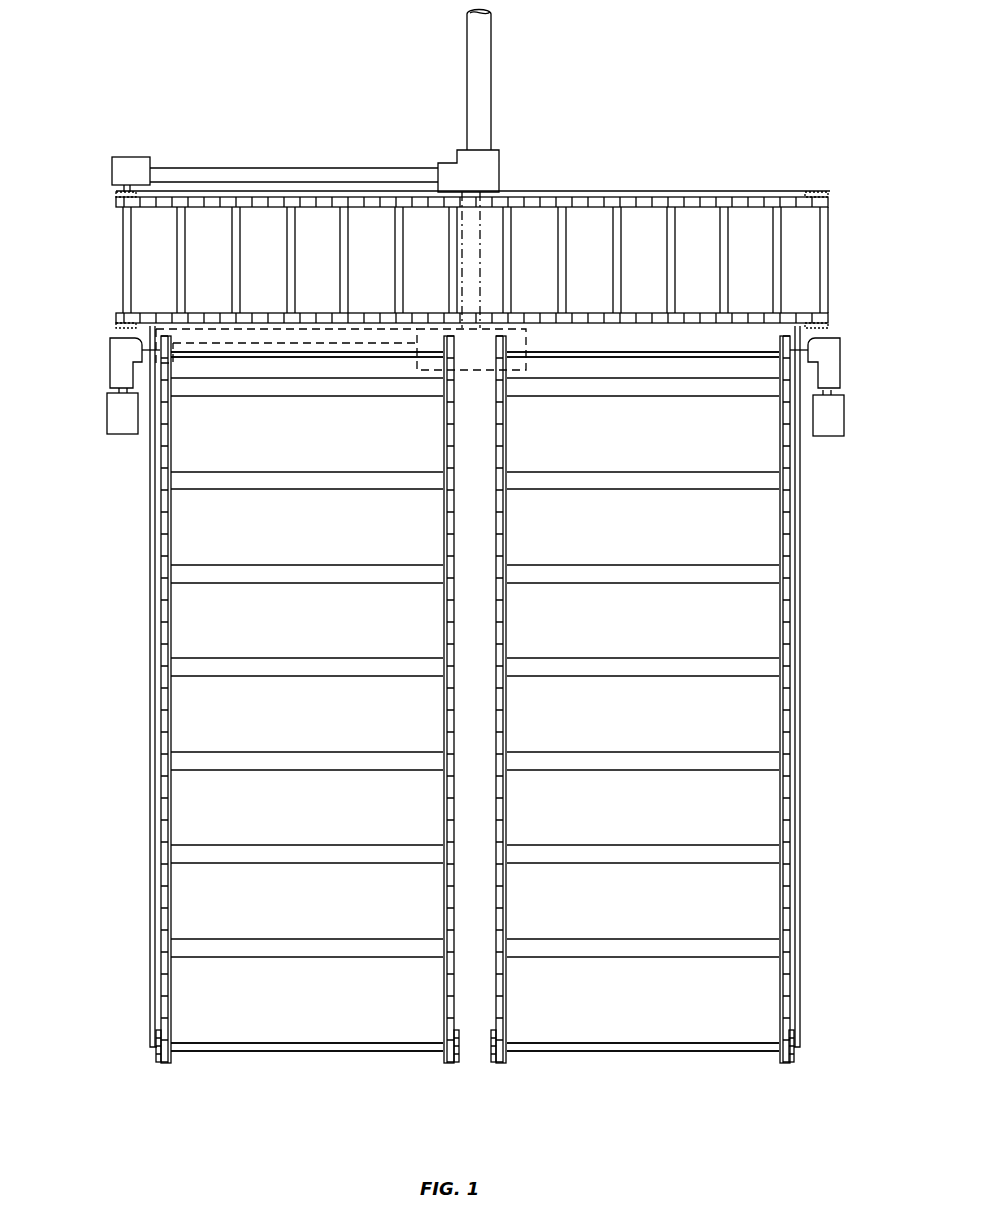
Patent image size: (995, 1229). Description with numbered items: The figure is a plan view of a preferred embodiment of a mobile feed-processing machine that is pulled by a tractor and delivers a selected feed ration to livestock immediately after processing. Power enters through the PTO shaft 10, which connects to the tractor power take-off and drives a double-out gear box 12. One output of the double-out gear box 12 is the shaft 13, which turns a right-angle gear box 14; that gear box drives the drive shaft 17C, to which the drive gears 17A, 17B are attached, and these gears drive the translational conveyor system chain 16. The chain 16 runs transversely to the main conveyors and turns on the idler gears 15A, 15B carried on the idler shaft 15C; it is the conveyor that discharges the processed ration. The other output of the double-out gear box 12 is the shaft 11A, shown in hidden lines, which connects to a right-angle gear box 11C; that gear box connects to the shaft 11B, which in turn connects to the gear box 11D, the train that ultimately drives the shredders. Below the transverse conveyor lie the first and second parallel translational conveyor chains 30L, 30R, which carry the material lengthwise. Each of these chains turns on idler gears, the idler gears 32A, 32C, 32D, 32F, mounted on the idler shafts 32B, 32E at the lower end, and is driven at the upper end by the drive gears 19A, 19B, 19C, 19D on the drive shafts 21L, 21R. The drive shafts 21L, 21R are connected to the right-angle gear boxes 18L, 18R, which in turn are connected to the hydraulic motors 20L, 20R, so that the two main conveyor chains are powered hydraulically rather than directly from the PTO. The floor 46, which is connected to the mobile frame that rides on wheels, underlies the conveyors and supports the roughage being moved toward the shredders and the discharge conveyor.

The PTO shaft 10 is at (491, 50).
The double-out gear box 12 is at (499, 170).
The shaft 13 is at (280, 168).
The right-angle gear box 14 is at (125, 157).
The idler gear 15A is at (830, 194).
The idler gear 15B is at (830, 323).
The idler shaft 15C is at (828, 262).
The translational conveyor system chain 16 is at (728, 230).
The drive gear 17A is at (116, 195).
The drive gear 17B is at (118, 325).
The drive shaft 17C is at (123, 258).
The shaft 11A is at (480, 262).
The shaft 11B is at (352, 343).
The right-angle gear box 11C is at (526, 363).
The gear box 11D is at (156, 330).
The right-angle gear box 18L is at (110, 378).
The right-angle gear box 18R is at (840, 378).
The drive gear 19A is at (160, 340).
The drive gear 19B is at (452, 368).
The drive gear 19C is at (497, 368).
The drive gear 19D is at (790, 373).
The hydraulic motor 20L is at (107, 418).
The hydraulic motor 20R is at (844, 422).
The drive shaft 21L is at (250, 353).
The drive shaft 21R is at (688, 357).
The translational conveyor chain 30L is at (150, 635).
The translational conveyor chain 30R is at (800, 635).
The idler gear 32A is at (161, 1062).
The idler shaft 32B is at (275, 1051).
The idler gear 32C is at (455, 1063).
The idler gear 32D is at (496, 1063).
The idler shaft 32E is at (630, 1051).
The idler gear 32F is at (793, 1063).
The floor 46 is at (150, 965).